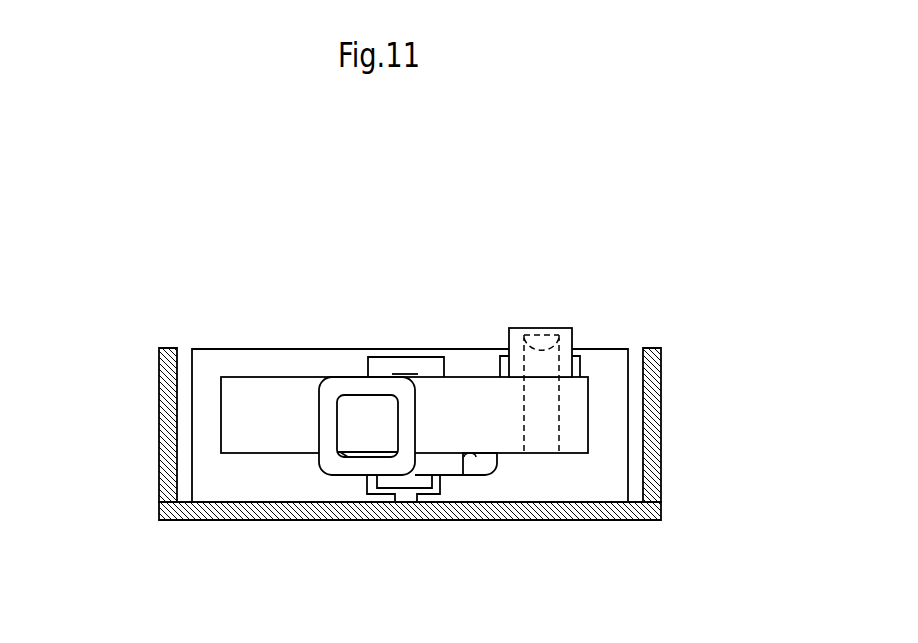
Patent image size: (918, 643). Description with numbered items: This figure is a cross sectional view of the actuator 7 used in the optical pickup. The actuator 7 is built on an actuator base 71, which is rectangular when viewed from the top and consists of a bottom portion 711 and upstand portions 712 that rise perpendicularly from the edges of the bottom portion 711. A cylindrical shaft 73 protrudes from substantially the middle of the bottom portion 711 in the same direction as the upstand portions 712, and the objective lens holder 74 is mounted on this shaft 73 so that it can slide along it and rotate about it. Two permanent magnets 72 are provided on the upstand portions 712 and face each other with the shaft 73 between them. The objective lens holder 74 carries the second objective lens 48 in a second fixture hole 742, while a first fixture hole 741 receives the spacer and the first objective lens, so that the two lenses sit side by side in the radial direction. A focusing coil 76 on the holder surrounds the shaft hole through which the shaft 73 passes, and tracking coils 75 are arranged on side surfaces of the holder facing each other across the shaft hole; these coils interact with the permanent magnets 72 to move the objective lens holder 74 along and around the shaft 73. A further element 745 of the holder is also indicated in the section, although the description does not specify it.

The actuator 7 is at (184, 276).
The actuator base 71 is at (414, 461).
The bottom portion 711 is at (203, 518).
The upstand portions 712 is at (215, 473).
The permanent magnets 72 is at (389, 362).
The shaft 73 is at (407, 497).
The objective lens holder 74 is at (273, 433).
The tracking coils 75 is at (340, 385).
The focusing coil 76 is at (445, 462).
The first fixture hole 741 is at (590, 358).
The second fixture hole 742 is at (567, 348).
The stopper 745 is at (485, 465).
The second objective lens 48 is at (541, 328).